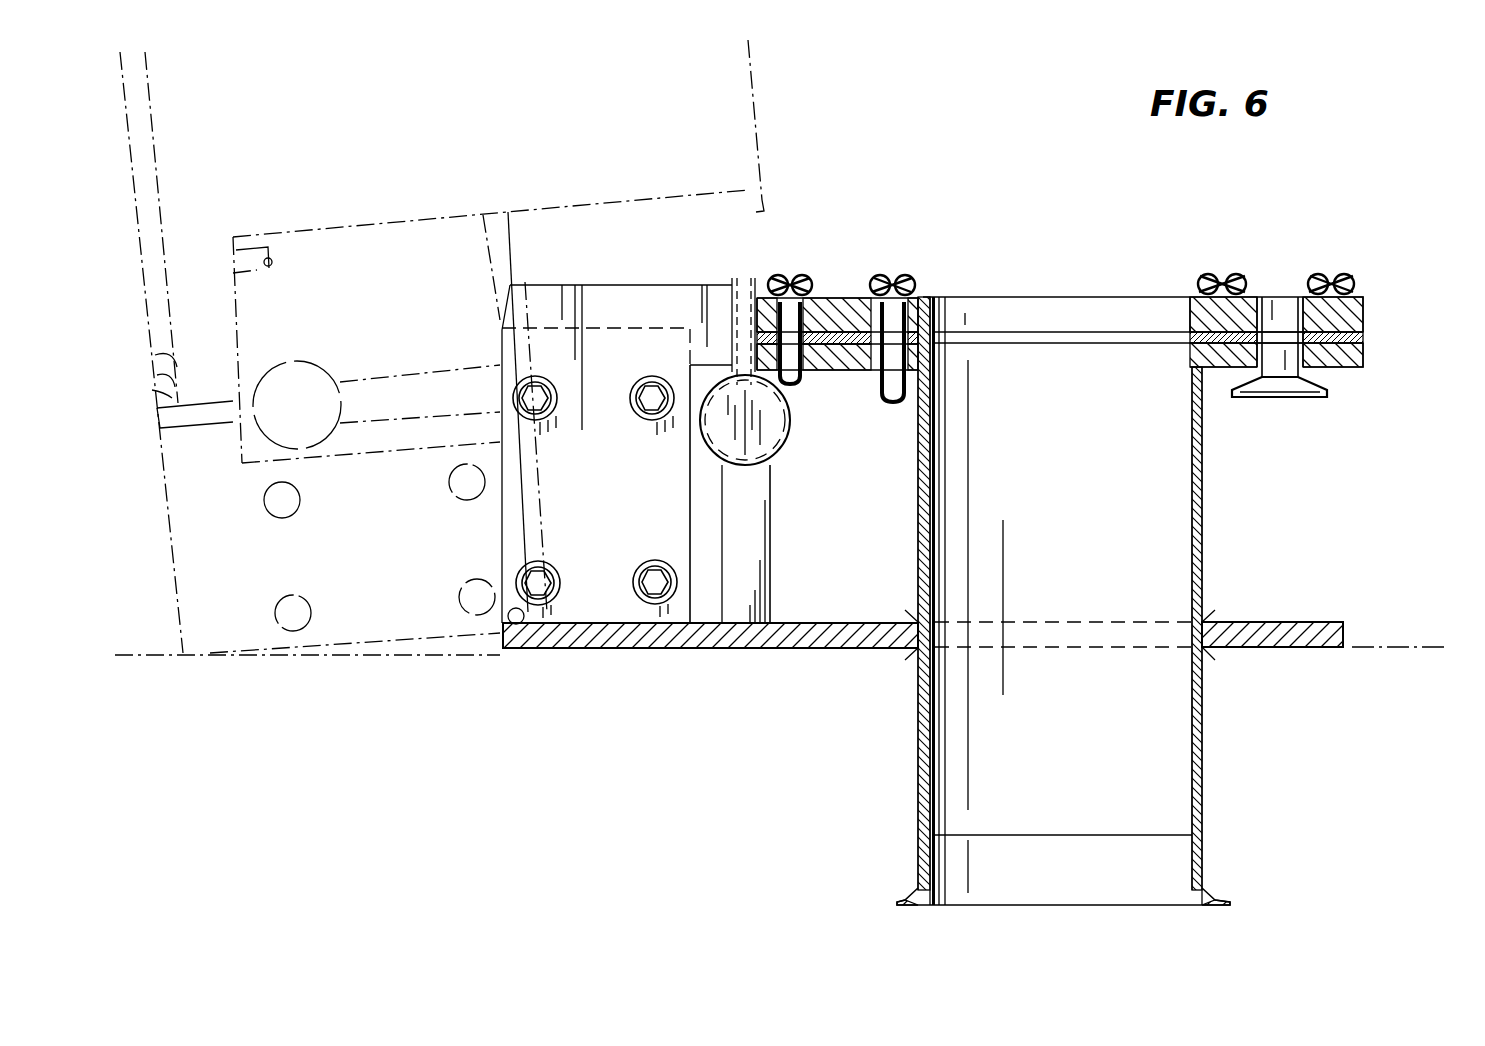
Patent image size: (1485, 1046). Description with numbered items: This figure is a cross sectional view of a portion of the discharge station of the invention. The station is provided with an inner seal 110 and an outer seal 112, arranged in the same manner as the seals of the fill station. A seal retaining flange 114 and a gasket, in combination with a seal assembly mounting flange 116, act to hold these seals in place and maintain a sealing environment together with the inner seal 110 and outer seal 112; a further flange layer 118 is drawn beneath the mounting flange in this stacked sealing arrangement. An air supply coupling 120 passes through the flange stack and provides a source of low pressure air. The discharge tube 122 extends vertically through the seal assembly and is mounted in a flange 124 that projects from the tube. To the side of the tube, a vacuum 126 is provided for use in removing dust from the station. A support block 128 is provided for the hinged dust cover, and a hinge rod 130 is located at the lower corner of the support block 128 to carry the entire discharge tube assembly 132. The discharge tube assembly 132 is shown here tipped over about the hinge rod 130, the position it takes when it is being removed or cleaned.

The inner seal 110 is at (890, 275).
The outer seal 112 is at (790, 275).
The seal retaining flange 114 is at (1365, 318).
The seal assembly mounting flange 116 is at (1365, 338).
The flange plate 118 is at (1365, 360).
The air supply coupling 120 is at (1300, 400).
The discharge tube 122 is at (1200, 770).
The flange 124 is at (1330, 625).
The vacuum 126 is at (792, 420).
The support block 128 is at (607, 605).
The hinge rod 130 is at (506, 625).
The discharge tube assembly 132 is at (175, 500).